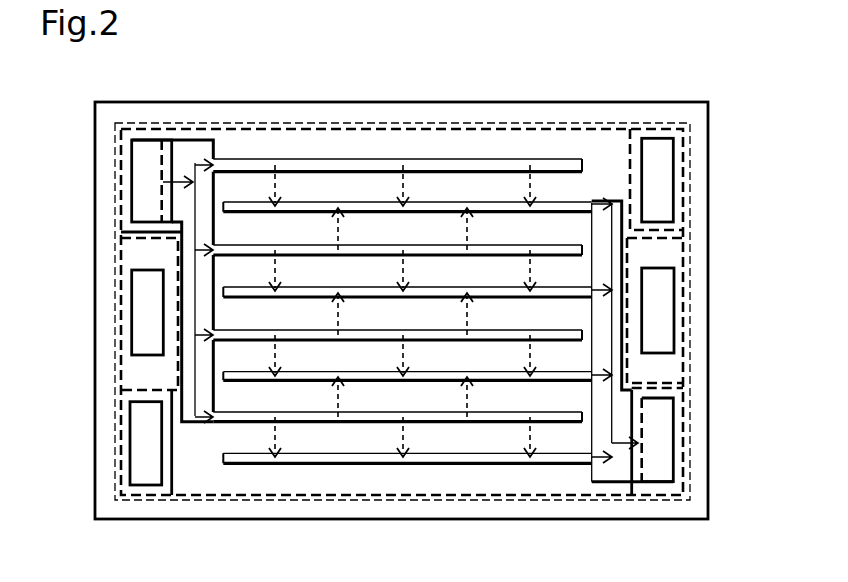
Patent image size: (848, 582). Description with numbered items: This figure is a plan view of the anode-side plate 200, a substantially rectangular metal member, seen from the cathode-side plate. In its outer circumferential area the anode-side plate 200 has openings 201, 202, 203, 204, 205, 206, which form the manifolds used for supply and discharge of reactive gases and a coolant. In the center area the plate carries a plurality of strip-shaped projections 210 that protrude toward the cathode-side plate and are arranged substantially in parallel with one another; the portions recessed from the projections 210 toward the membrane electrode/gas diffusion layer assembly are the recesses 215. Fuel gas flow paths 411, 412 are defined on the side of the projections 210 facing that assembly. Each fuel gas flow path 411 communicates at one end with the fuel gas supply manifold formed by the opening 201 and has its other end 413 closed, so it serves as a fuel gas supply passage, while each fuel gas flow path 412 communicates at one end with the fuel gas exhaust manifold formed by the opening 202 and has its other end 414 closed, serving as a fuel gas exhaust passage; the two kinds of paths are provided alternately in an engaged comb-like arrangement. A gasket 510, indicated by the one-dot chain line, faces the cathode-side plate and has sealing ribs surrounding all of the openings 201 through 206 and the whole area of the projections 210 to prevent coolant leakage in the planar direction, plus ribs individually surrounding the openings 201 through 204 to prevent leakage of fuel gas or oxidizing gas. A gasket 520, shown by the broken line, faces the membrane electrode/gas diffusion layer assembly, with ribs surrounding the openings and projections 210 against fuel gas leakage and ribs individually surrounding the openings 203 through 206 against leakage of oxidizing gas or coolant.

The anode-side plate 200 is at (676, 101).
The opening 201 is at (142, 167).
The opening 202 is at (662, 423).
The opening 203 is at (143, 440).
The opening 204 is at (662, 178).
The opening 205 is at (142, 313).
The opening 206 is at (658, 312).
The projection 210 is at (315, 205).
The recess 215 is at (387, 230).
The fuel gas flow path 411 is at (250, 248).
The fuel gas flow path 412 is at (437, 292).
The closed end 413 is at (580, 250).
The closed end 414 is at (247, 457).
The gasket 510 is at (475, 123).
The gasket 520 is at (536, 128).